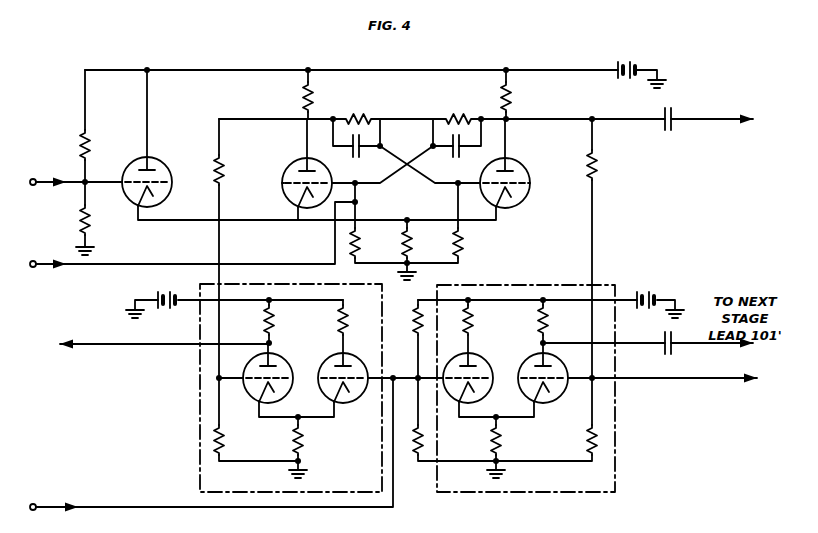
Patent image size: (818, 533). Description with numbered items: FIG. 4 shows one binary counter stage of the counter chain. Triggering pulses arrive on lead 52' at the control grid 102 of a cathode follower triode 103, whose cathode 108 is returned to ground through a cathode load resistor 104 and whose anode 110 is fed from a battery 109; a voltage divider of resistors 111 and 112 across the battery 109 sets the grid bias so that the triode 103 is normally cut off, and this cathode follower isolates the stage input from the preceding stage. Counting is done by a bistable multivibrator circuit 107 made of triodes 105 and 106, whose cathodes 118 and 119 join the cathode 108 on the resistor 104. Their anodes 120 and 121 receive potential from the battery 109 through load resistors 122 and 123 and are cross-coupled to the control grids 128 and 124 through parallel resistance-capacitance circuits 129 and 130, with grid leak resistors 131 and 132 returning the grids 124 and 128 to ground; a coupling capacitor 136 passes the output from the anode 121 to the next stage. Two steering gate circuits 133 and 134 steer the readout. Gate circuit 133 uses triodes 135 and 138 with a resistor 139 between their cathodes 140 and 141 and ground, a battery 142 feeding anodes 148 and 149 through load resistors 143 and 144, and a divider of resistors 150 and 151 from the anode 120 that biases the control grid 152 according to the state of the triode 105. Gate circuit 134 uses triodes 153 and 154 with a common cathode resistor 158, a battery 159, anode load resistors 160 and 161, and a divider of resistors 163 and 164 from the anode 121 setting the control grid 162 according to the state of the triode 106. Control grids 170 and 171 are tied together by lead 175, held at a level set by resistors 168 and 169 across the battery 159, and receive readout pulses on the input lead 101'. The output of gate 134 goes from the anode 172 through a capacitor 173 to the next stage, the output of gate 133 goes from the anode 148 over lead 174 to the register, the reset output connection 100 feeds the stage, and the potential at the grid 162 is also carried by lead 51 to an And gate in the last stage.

The lead 52' is at (76, 171).
The output connection 100 is at (48, 268).
The input lead 101' is at (211, 455).
The control grid 102 is at (128, 196).
The cathode follower triode 103 is at (158, 165).
The cathode load resistor 104 is at (412, 240).
The triode 105 is at (294, 168).
The triode 106 is at (516, 166).
The bistable multivibrator circuit 107 is at (406, 177).
The cathode 108 is at (155, 204).
The battery 109 is at (624, 62).
The anode 110 is at (135, 165).
The resistor 111 is at (80, 143).
The resistor 112 is at (92, 224).
The cathode 118 is at (296, 204).
The cathode 119 is at (516, 204).
The anode 120 is at (284, 183).
The anode 121 is at (526, 184).
The load resistor 122 is at (300, 97).
The load resistor 123 is at (512, 95).
The control grid 124 is at (323, 170).
The control grid 128 is at (492, 170).
The parallel resistance-capacitance circuit 129 is at (372, 124).
The parallel resistance-capacitance circuit 130 is at (440, 124).
The grid leak resistor 131 is at (362, 240).
The grid leak resistor 132 is at (466, 242).
The steering gate circuit 133 is at (200, 408).
The steering gate circuit 134 is at (615, 444).
The triode 135 is at (282, 360).
The coupling capacitor 136 is at (666, 132).
The triode 138 is at (320, 378).
The resistor 139 is at (310, 458).
The cathode 140 is at (280, 394).
The cathode 141 is at (310, 424).
The battery 142 is at (160, 286).
The load resistor 143 is at (264, 322).
The load resistor 144 is at (336, 322).
The anode 148 is at (258, 372).
The anode 149 is at (346, 358).
The resistor 150 is at (224, 170).
The resistor 151 is at (226, 440).
The control grid 152 is at (256, 396).
The triode 153 is at (478, 358).
The triode 154 is at (518, 378).
The common cathode resistor 158 is at (504, 434).
The battery 159 is at (640, 292).
The anode load resistor 160 is at (474, 320).
The anode load resistor 161 is at (550, 324).
The control grid 162 is at (552, 398).
The resistor 163 is at (598, 172).
The resistor 164 is at (586, 446).
The resistor 168 is at (410, 314).
The resistor 169 is at (414, 456).
The control grid 170 is at (356, 404).
The control grid 171 is at (456, 404).
The anode 172 is at (552, 364).
The capacitor 173 is at (664, 356).
The lead 174 is at (106, 342).
The lead 175 is at (400, 376).
The lead 51 is at (678, 384).